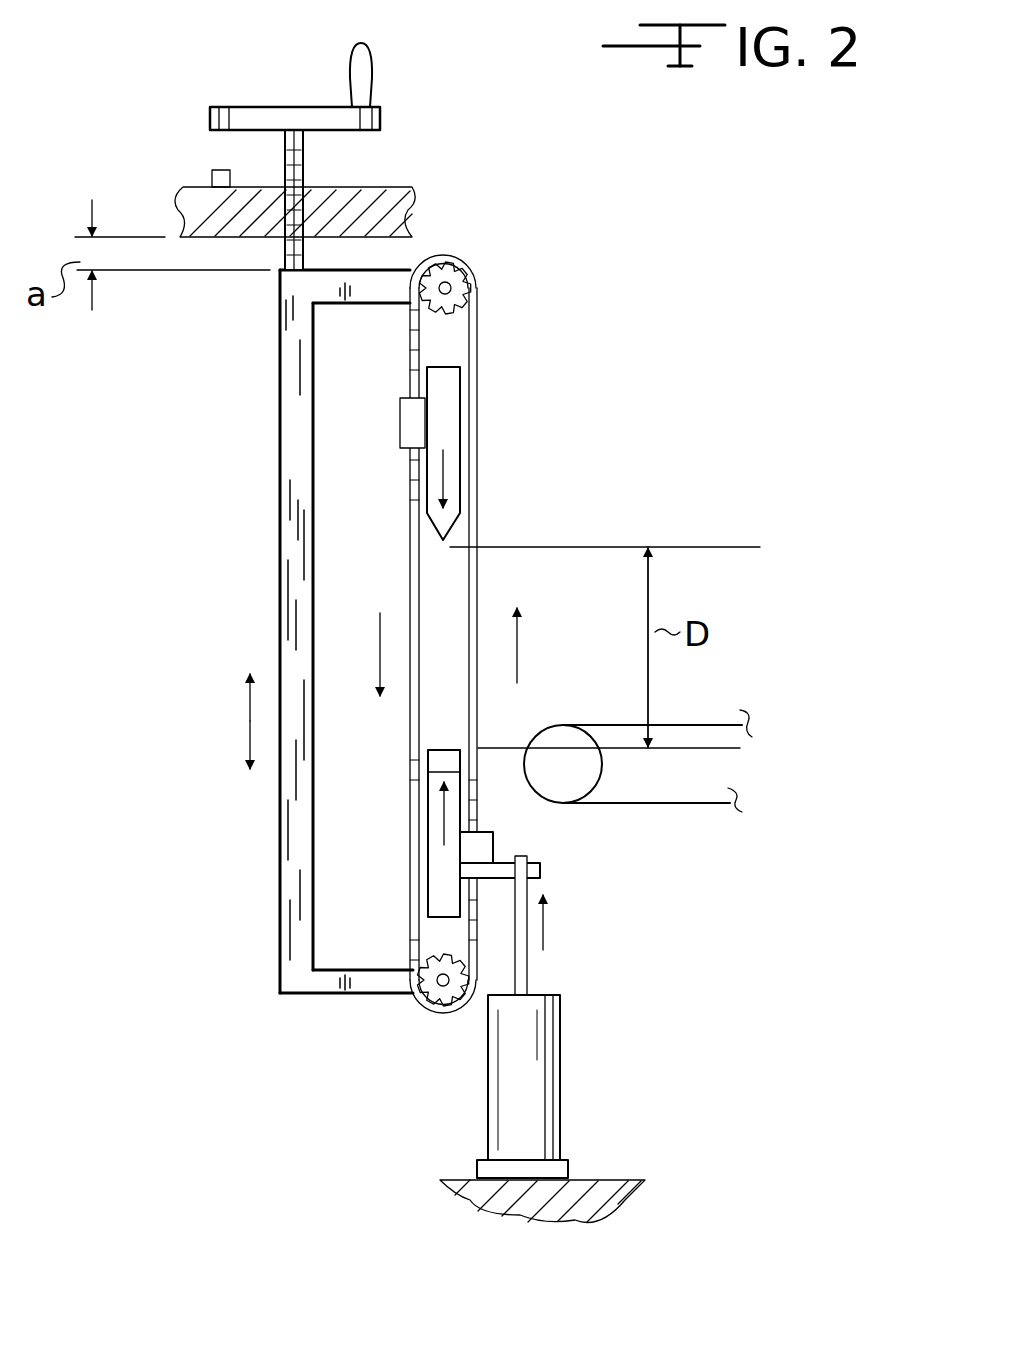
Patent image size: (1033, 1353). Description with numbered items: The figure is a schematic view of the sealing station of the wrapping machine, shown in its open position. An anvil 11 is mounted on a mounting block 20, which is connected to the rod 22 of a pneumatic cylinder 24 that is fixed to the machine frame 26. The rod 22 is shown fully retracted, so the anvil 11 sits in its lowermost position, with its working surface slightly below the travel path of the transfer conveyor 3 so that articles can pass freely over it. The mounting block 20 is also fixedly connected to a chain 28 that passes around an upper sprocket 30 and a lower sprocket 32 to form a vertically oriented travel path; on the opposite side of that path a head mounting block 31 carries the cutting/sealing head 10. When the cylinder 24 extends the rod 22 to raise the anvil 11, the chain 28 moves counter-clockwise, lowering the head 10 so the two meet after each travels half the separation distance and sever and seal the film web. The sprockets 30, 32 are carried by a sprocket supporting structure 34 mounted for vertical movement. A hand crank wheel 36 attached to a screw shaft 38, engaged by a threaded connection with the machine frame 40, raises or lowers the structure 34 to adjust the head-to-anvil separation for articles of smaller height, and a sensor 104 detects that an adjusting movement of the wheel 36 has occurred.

The transfer conveyor 3 is at (672, 803).
The cutting/sealing head 10 is at (437, 530).
The anvil 11 is at (445, 760).
The mounting block 20 is at (483, 847).
The cylinder rod 22 is at (530, 972).
The pneumatic cylinder 24 is at (545, 1045).
The machine frame 26 is at (608, 1180).
The chain 28 is at (478, 300).
The upper sprocket 30 is at (455, 280).
The head mounting block 31 is at (407, 428).
The lower sprocket 32 is at (440, 990).
The sprocket supporting structure 34 is at (278, 532).
The hand crank wheel 36 is at (386, 116).
The screw shaft 38 is at (280, 255).
The machine frame 40 is at (405, 207).
The sensor 104 is at (212, 174).